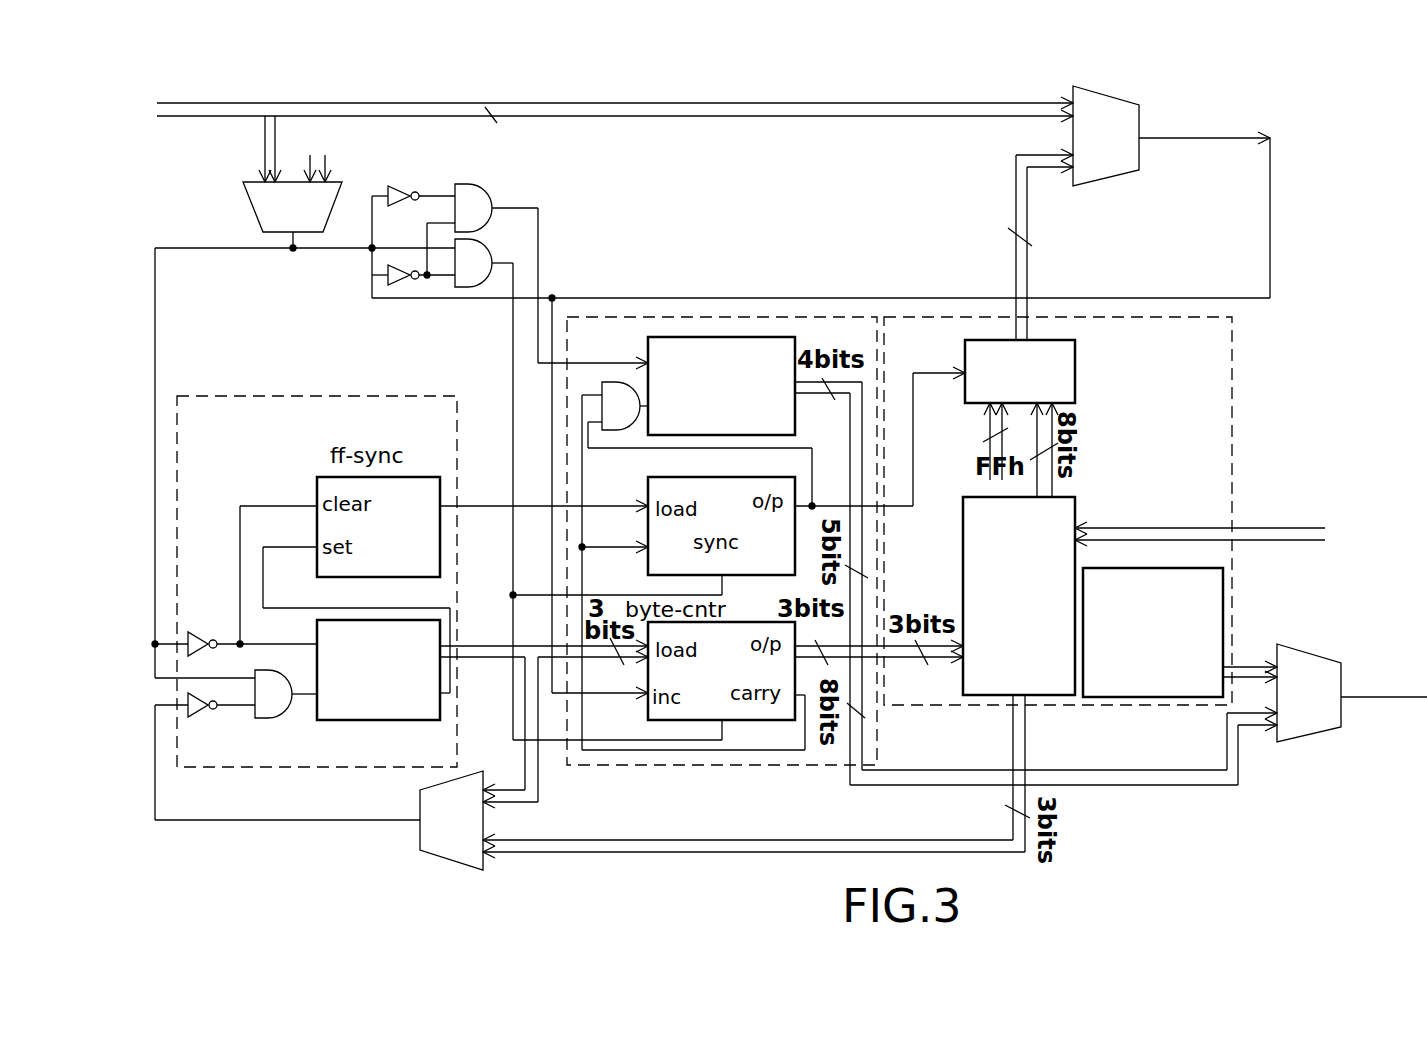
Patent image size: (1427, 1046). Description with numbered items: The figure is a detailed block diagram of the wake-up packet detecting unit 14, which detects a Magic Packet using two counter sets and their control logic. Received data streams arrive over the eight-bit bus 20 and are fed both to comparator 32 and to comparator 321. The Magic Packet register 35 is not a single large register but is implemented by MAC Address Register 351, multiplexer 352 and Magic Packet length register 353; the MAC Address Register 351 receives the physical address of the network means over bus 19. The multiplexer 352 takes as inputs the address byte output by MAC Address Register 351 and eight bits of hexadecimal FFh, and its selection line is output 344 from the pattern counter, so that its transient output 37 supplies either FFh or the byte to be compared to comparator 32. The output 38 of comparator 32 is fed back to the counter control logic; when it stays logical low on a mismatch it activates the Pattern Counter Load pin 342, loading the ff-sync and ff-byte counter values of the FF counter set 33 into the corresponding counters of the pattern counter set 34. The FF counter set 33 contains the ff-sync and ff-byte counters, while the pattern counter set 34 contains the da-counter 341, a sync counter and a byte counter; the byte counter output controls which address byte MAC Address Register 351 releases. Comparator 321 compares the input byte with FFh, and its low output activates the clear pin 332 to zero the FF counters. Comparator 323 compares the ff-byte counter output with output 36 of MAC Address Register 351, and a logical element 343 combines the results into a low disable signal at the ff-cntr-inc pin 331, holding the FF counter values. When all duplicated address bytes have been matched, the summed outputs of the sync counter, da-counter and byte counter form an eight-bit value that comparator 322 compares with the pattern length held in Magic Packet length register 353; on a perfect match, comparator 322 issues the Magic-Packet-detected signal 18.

The wake-up packet detecting unit 14 is at (1176, 851).
The Magic-Packet-detected signal 18 is at (1362, 700).
The bus 19 is at (1275, 522).
The bus 20 is at (193, 103).
The comparator 32 is at (1122, 98).
The sync counter (FF counter set, ff-cntr) 33 is at (226, 396).
The pattern counter (cntr) 34 is at (725, 317).
The Magic Packet register 35 is at (1232, 385).
The output of MAC Address Register 36 is at (1027, 762).
The transient output of multiplexer 37 is at (1016, 155).
The output of comparator 38 is at (1090, 300).
The comparator 321 is at (345, 187).
The comparator 322 is at (1318, 650).
The comparator 323 is at (443, 860).
The ff-cntr-inc pin 331 is at (302, 705).
The clear pin 332 is at (246, 648).
The da-counter 341 is at (553, 350).
The Pattern Counter Load pin 342 is at (512, 343).
The logical element 343 is at (540, 214).
The output of pattern counter 344 is at (945, 442).
The MAC Address Register 351 is at (1075, 497).
The multiplexer 352 is at (1078, 367).
The Magic Packet length register 353 is at (1225, 590).